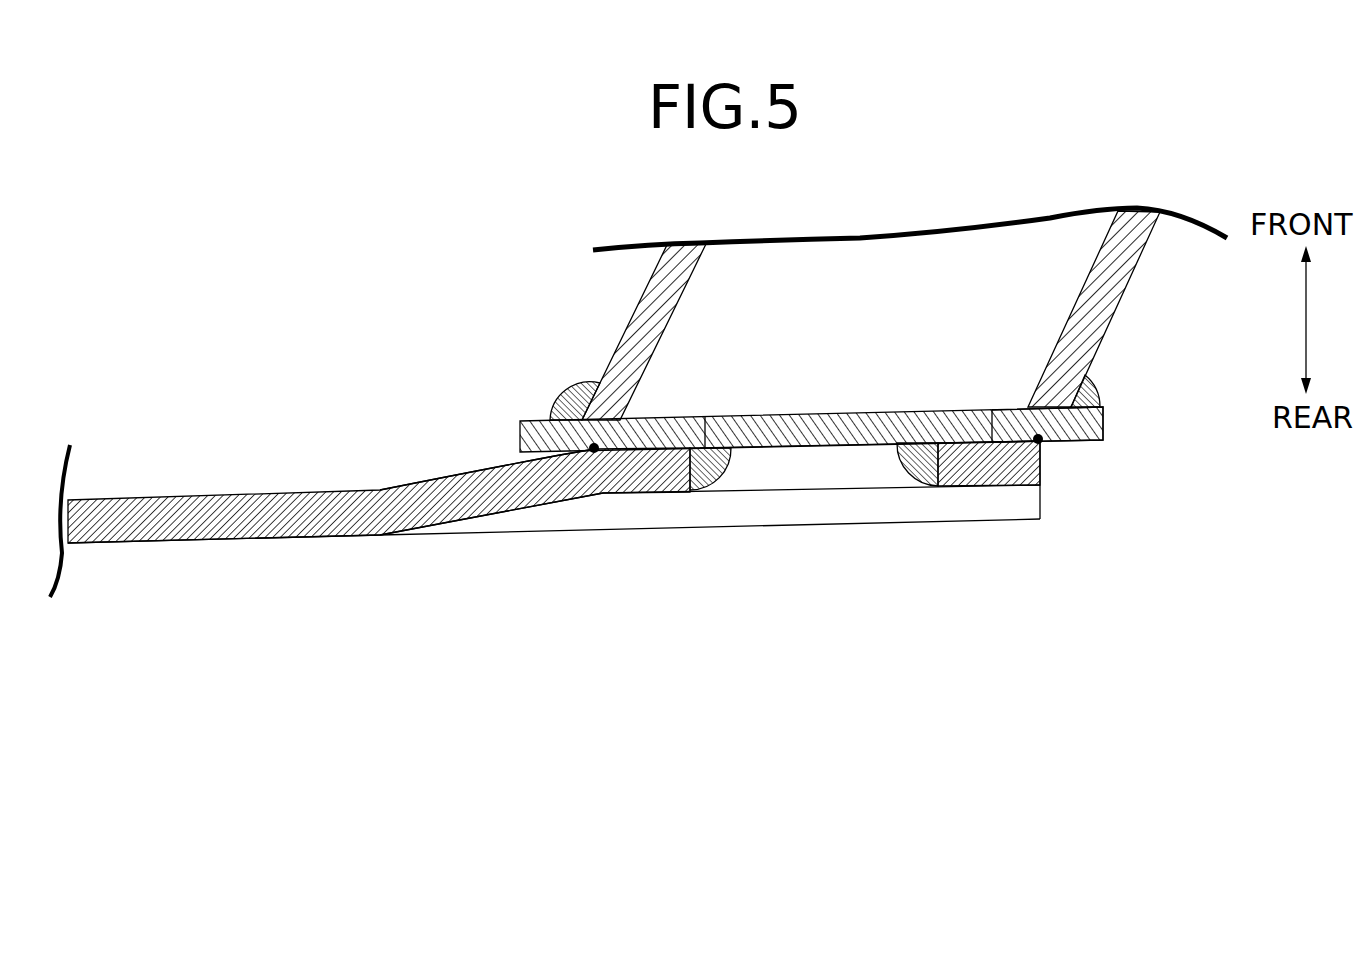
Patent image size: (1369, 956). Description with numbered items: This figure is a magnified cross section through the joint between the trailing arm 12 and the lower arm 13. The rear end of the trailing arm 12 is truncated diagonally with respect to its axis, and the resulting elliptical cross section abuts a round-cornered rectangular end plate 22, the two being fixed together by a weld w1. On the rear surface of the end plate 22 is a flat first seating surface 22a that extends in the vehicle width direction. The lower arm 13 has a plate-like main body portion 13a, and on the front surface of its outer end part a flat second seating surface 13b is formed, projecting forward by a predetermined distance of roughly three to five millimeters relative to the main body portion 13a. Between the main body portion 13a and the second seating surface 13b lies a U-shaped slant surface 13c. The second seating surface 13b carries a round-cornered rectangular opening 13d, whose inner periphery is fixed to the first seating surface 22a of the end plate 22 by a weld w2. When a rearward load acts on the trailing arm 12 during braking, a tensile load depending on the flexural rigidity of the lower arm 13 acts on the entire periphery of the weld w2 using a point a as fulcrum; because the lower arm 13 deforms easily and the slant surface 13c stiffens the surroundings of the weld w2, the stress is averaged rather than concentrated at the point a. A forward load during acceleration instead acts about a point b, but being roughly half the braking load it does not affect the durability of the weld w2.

The trailing arm 12 is at (1124, 317).
The lower arm 13 is at (219, 480).
The main body portion 13a is at (307, 522).
The second seating surface 13b is at (992, 410).
The slant surface 13c is at (452, 490).
The opening 13d is at (933, 410).
The end plate 22 is at (818, 404).
The first seating surface 22a is at (822, 447).
The weld w1 is at (565, 391).
The weld w2 is at (707, 416).
The point a is at (596, 453).
The point b is at (1041, 442).